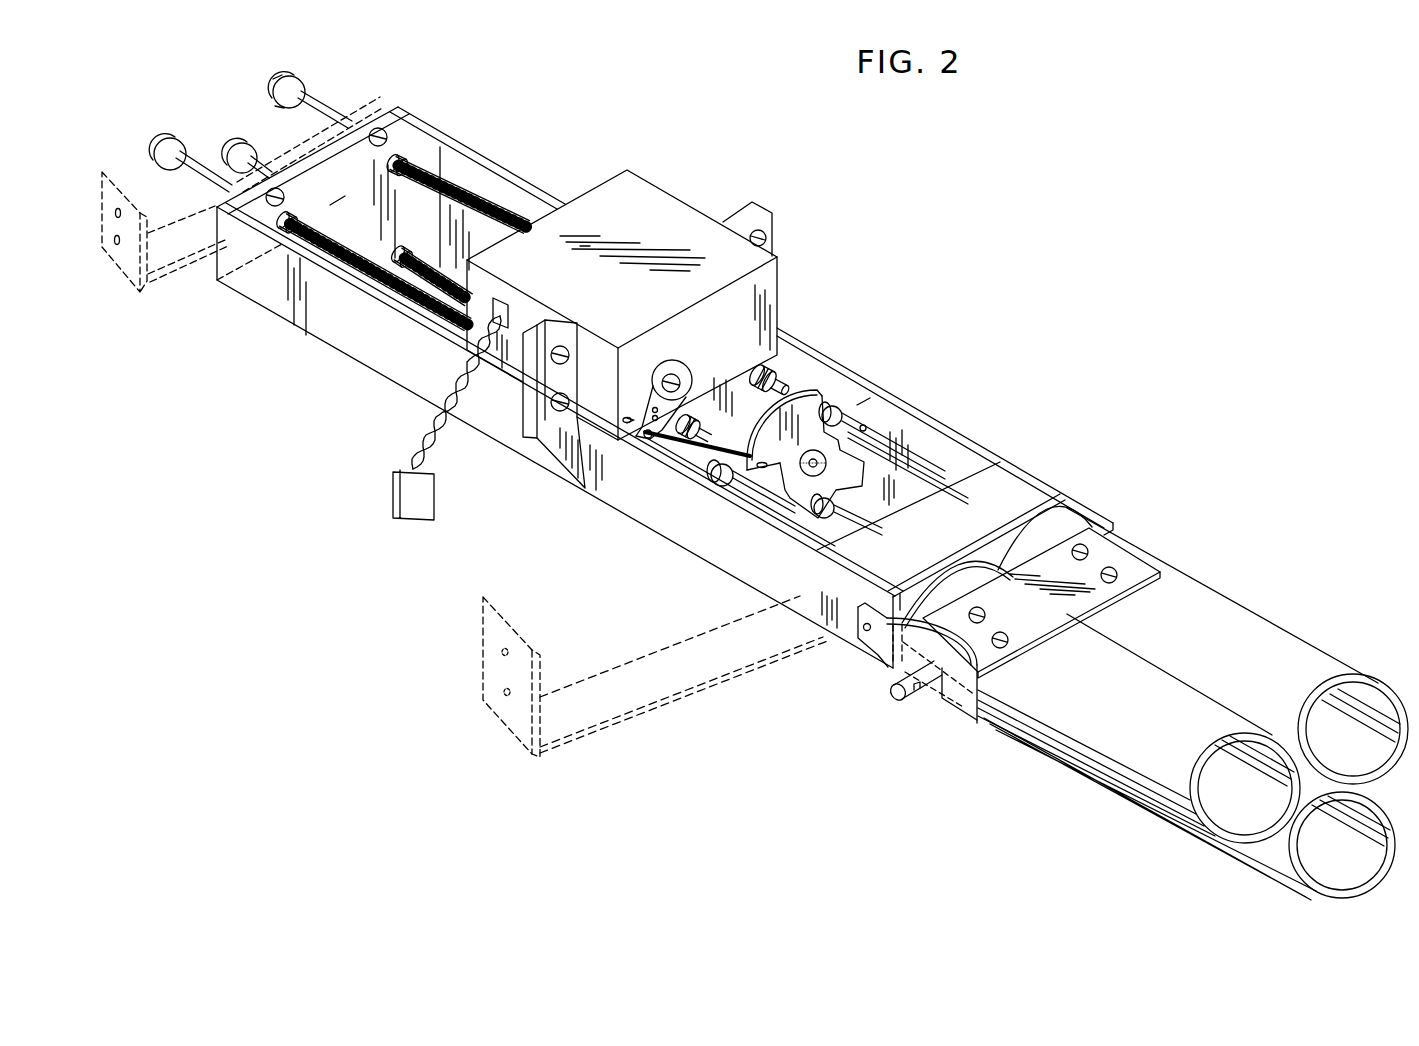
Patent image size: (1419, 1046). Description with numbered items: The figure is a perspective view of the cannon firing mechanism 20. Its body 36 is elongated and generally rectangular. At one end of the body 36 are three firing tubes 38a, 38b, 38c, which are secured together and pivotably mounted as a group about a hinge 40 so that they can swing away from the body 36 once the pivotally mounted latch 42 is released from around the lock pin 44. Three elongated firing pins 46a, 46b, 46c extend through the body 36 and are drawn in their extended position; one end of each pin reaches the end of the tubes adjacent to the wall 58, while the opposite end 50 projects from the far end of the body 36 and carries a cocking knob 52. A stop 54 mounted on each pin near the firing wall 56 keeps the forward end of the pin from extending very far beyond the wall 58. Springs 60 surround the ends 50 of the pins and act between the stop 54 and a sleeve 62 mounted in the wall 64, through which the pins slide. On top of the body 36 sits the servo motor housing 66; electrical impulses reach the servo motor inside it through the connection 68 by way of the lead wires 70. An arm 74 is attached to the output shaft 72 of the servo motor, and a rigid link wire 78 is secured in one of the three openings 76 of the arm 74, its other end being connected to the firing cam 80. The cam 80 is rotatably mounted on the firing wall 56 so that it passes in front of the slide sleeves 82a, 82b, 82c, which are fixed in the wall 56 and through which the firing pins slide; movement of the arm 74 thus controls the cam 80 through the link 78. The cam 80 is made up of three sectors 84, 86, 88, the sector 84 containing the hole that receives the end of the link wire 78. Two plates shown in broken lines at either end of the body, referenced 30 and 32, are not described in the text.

The cannon firing mechanism 20 is at (1013, 402).
The mounting plate 30 is at (618, 703).
The end plate 32 is at (172, 255).
The body 36 is at (640, 536).
The firing tube 38a is at (1277, 652).
The firing tube 38b is at (1262, 852).
The firing tube 38c is at (1103, 745).
The hinge 40 is at (1070, 503).
The latch 42 is at (923, 650).
The lock pin 44 is at (905, 700).
The firing pin 46a is at (883, 432).
The firing pin 46b is at (855, 517).
The firing pin 46c is at (737, 492).
The end of firing pin 50 is at (333, 110).
The cocking knob 52 is at (281, 76).
The stop 54 is at (773, 367).
The firing wall 56 is at (857, 405).
The wall 58 is at (988, 540).
The spring 60 is at (475, 197).
The sleeve 62 is at (437, 148).
The wall 64 is at (338, 200).
The servo motor housing 66 is at (673, 217).
The connection 68 is at (410, 490).
The lead wires 70 is at (443, 373).
The output shaft 72 is at (673, 372).
The arm 74 is at (648, 402).
The openings 76 is at (647, 390).
The rigid link wire 78 is at (657, 443).
The firing cam 80 is at (860, 474).
The slide sleeve 82a is at (834, 400).
The slide sleeve 82b is at (820, 516).
The slide sleeve 82c is at (717, 477).
The sector 84 is at (807, 397).
The sector 86 is at (960, 432).
The sector 88 is at (793, 527).